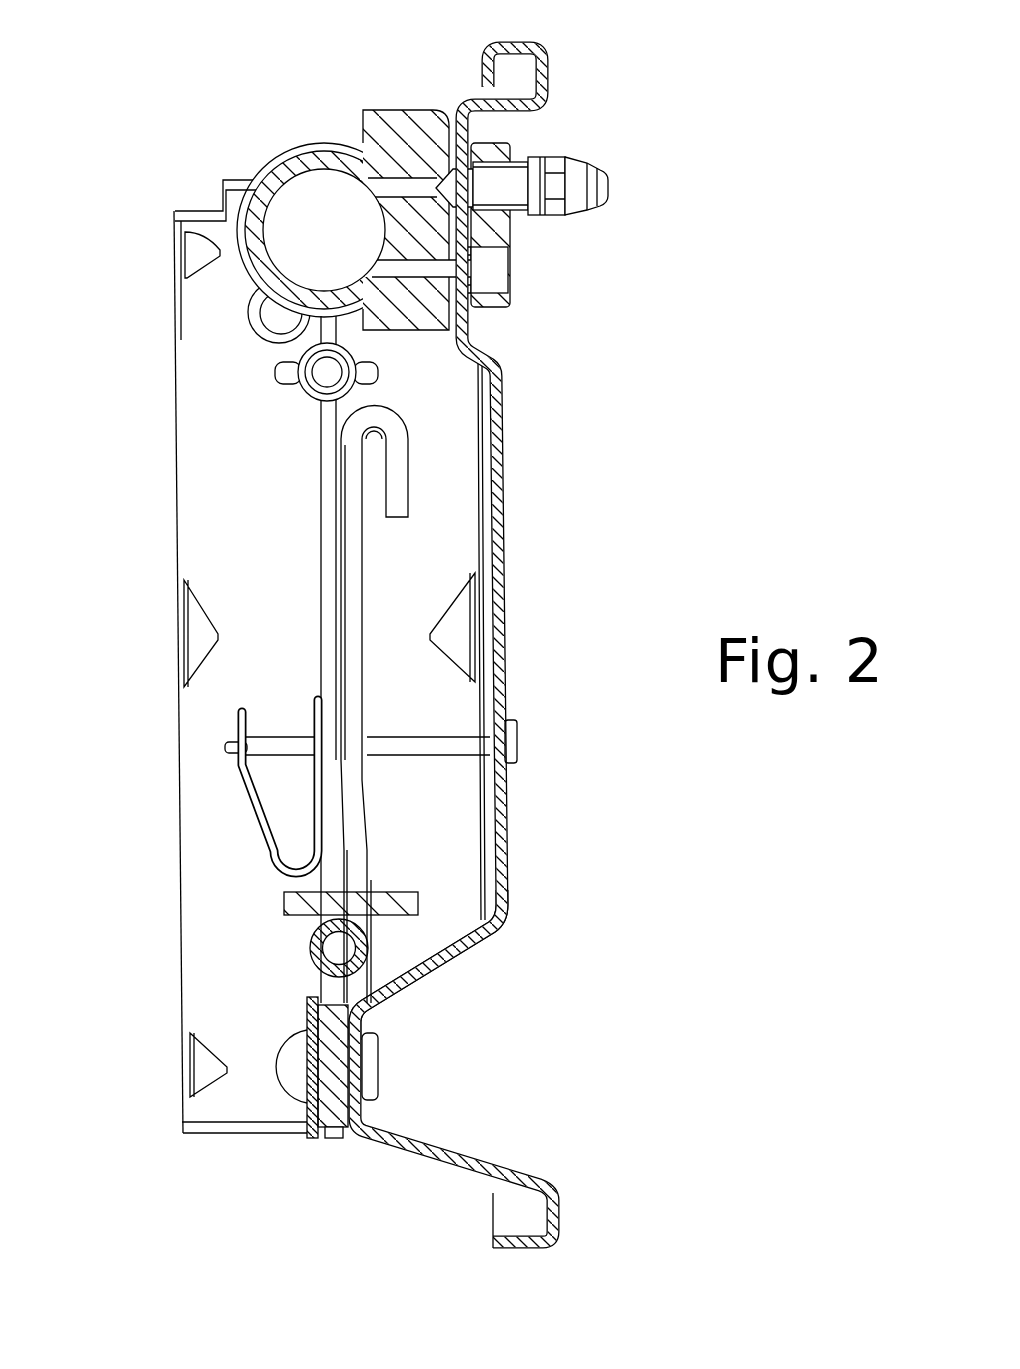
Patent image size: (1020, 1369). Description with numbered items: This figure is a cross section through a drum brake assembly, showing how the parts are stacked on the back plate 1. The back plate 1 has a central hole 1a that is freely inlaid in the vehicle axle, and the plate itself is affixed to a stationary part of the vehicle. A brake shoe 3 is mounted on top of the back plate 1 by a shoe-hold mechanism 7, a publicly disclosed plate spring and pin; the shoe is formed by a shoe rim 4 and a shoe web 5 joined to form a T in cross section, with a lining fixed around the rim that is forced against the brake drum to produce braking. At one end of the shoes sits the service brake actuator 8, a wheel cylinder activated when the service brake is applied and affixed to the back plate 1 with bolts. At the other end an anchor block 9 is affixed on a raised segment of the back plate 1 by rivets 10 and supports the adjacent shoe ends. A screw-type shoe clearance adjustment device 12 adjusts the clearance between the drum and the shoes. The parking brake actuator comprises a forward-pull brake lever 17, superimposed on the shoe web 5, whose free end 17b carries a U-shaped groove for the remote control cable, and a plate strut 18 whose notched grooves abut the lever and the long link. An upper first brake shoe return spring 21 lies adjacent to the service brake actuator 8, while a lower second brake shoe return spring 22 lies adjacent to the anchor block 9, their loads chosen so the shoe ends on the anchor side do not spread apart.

The back plate 1 is at (505, 427).
The central hole 1a is at (505, 808).
The brake shoe 3 is at (173, 506).
The shoe rim 4 is at (203, 557).
The shoe web 5 is at (323, 657).
The shoe-hold mechanism 7 is at (229, 762).
The service brake actuator 8 is at (292, 143).
The anchor block 9 is at (323, 1146).
The rivet 10 is at (378, 1057).
The shoe clearance adjustment device 12 is at (272, 379).
The brake lever 17 is at (355, 682).
The free end 17b is at (397, 493).
The strut 18 is at (285, 906).
The first brake shoe return spring 21 is at (252, 294).
The second brake shoe return spring 22 is at (310, 950).